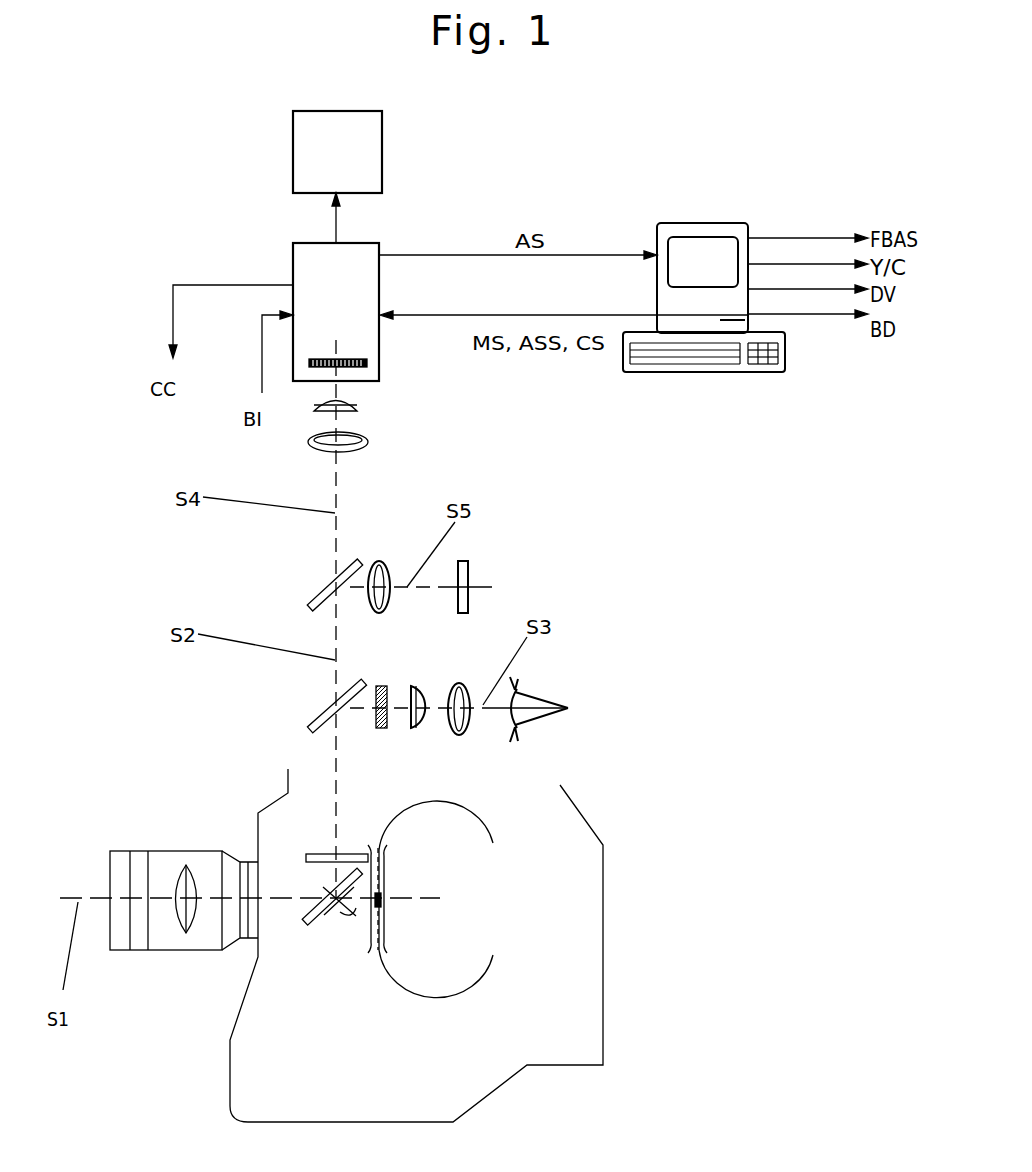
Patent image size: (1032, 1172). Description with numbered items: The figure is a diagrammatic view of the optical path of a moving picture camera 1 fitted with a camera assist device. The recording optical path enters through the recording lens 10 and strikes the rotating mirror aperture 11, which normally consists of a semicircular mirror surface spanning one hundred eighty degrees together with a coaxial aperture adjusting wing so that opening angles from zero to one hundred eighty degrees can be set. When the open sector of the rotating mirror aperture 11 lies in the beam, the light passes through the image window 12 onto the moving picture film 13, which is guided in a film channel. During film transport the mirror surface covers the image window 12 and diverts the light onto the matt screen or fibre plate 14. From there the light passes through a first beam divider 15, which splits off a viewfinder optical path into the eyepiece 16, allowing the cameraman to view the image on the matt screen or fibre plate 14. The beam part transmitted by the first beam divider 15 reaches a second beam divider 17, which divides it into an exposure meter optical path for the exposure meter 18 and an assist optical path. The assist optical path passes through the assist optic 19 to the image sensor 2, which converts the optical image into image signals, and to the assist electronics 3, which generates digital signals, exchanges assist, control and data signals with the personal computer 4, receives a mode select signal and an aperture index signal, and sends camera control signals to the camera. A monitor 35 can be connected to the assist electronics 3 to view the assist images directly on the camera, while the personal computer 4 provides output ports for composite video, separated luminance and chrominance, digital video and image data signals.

The moving picture camera 1 is at (573, 1020).
The image sensor 2 is at (367, 363).
The assist electronics 3 is at (322, 270).
The personal computer 4 is at (697, 247).
The recording lens 10 is at (185, 927).
The rotating mirror aperture 11 is at (310, 923).
The image window 12 is at (382, 888).
The moving picture film 13 is at (407, 998).
The matt screen or fibre plate 14 is at (313, 855).
The first beam divider 15 is at (323, 710).
The eyepiece 16 is at (414, 695).
The second beam divider 17 is at (320, 598).
The exposure meter 18 is at (468, 574).
The assist optic 19 is at (352, 424).
The monitor 35 is at (328, 150).